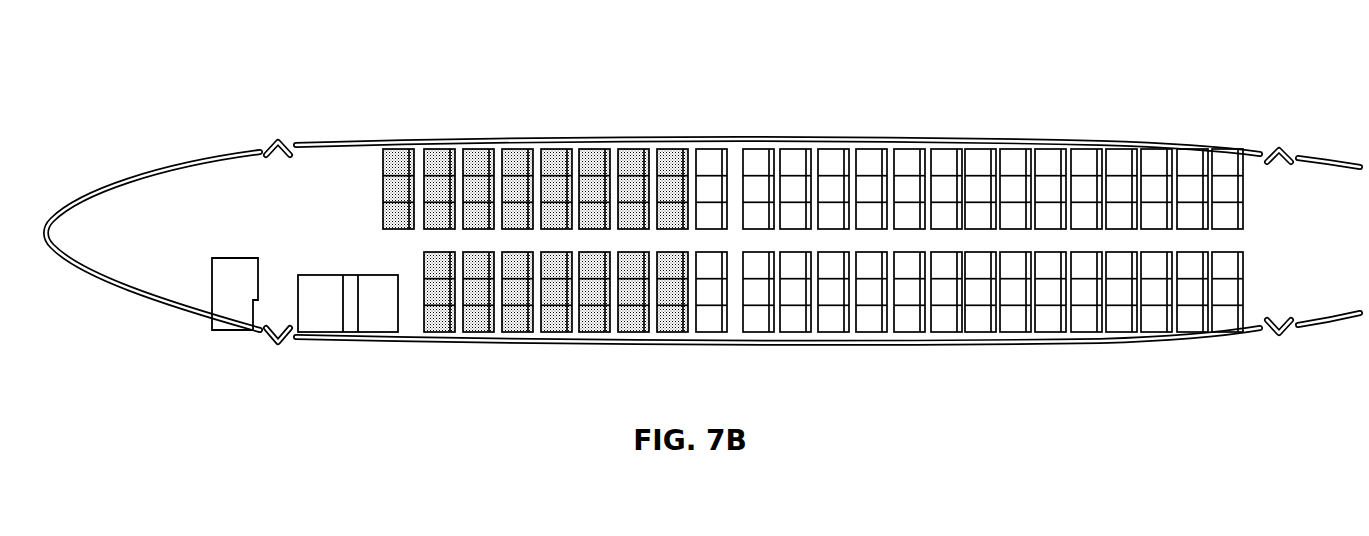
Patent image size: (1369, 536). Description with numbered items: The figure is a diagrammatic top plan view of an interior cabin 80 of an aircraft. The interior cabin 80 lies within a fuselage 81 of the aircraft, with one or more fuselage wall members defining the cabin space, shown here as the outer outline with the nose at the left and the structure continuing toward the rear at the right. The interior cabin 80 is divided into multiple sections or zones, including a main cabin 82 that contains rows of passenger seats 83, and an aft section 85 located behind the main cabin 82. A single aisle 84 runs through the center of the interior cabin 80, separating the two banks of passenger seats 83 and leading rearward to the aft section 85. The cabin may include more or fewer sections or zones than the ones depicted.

The interior cabin 80 is at (296, 84).
The fuselage 81 is at (500, 143).
The main cabin 82 is at (437, 168).
The passenger seats 83 is at (710, 172).
The single aisle 84 is at (832, 235).
The aft section 85 is at (1263, 173).